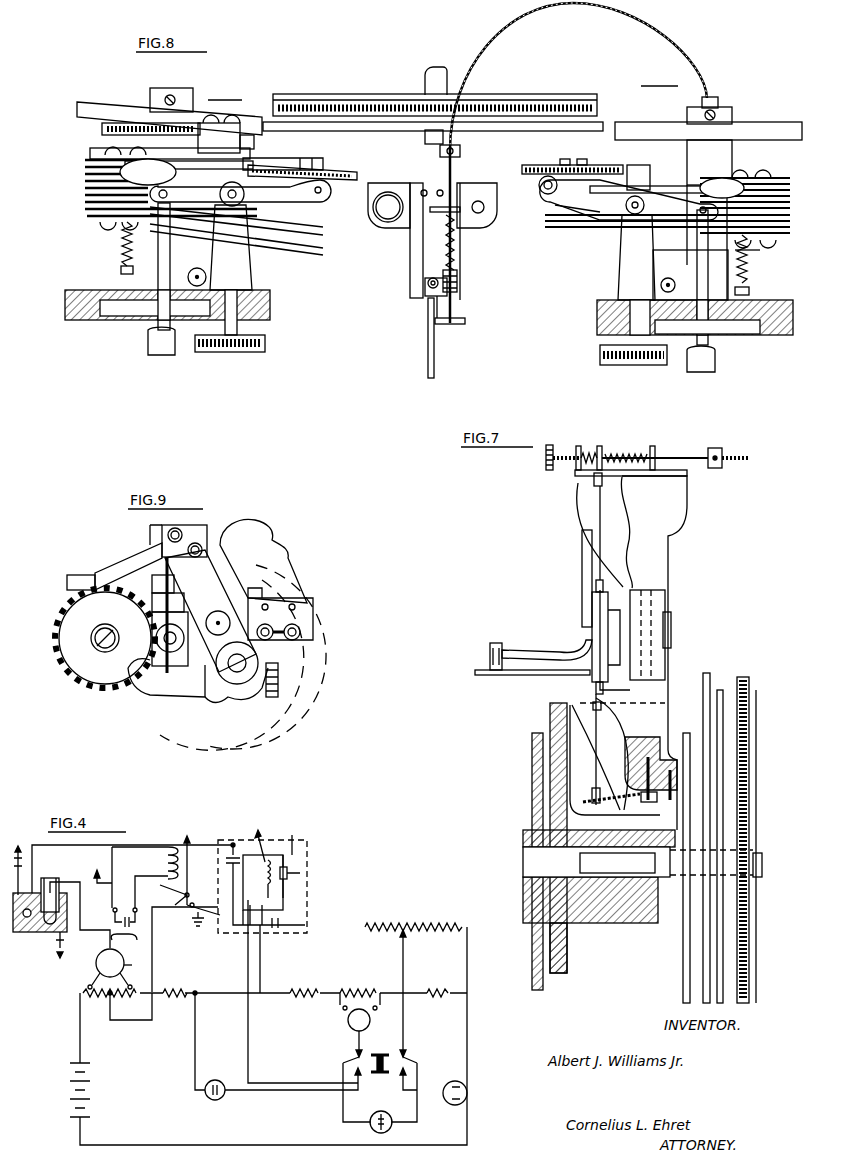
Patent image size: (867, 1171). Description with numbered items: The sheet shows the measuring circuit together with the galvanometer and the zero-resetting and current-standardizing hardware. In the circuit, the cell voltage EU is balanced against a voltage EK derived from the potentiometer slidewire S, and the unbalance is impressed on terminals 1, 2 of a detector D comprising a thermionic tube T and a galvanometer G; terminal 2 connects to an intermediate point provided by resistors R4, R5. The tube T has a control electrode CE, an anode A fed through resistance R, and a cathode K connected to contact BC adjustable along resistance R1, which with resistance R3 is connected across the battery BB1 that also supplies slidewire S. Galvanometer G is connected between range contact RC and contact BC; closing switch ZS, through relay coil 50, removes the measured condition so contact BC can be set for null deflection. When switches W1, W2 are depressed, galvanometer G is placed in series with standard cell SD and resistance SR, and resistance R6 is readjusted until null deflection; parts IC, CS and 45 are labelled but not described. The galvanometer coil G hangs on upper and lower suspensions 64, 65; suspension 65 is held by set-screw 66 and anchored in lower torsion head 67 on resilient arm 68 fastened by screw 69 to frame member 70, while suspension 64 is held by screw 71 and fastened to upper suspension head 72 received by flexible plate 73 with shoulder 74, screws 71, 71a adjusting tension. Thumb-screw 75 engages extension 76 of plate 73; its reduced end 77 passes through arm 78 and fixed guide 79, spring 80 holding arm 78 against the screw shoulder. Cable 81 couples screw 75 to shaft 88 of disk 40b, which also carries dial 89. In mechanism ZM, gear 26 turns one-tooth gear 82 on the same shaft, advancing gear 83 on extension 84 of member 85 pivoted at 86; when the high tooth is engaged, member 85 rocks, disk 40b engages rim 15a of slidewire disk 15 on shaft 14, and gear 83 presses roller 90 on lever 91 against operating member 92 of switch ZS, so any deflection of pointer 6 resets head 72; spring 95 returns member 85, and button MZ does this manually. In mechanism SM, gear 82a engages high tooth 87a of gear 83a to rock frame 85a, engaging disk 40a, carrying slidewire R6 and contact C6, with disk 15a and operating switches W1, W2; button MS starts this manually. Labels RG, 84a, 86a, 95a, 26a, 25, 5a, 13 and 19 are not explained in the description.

In FIG. 8, the standardizing mechanism SM is at (225, 92).
In FIG. 8, the zero-resetting mechanism ZM is at (659, 77).
In FIG. 8, the flexible cable 81 is at (476, 58).
In FIG. 7, the flexible cable 81 is at (738, 461).
In FIG. 8, the shaft of disk 40b 88 is at (719, 100).
In FIG. 8, the disk 40b is at (628, 124).
In FIG. 8, the disk 40a is at (76, 110).
In FIG. 9, the disk 40a is at (332, 668).
In FIG. 8, the rack gear RG is at (103, 128).
In FIG. 9, the rack gear RG is at (246, 748).
In FIG. 8, the slidewire S is at (320, 98).
In FIG. 7, the slidewire S is at (744, 677).
In FIG. 4, the slidewire S is at (133, 965).
In FIG. 8, the slidewire disk 15 is at (552, 100).
In FIG. 8, the disk 15a is at (600, 131).
In FIG. 7, the disk 15a is at (706, 673).
In FIG. 8, the shaft 14 is at (425, 78).
In FIG. 7, the shaft 14 is at (523, 862).
In FIG. 8, the plate 84a is at (288, 158).
In FIG. 8, the gear 83a is at (352, 170).
In FIG. 9, the gear 83a is at (70, 674).
In FIG. 8, the switch W1 is at (326, 226).
In FIG. 4, the switch W1 is at (347, 1062).
In FIG. 8, the switch W2 is at (316, 246).
In FIG. 4, the switch W2 is at (412, 1064).
In FIG. 8, the operating member of switch ZS 92 is at (328, 203).
In FIG. 8, the frame 85a is at (212, 236).
In FIG. 8, the push button MS is at (162, 356).
In FIG. 8, the pivot 86a is at (206, 276).
In FIG. 8, the spring 95a is at (124, 248).
In FIG. 9, the spring 95a is at (280, 690).
In FIG. 8, the gear 26a is at (236, 353).
In FIG. 8, the thumb-screw 75 is at (453, 176).
In FIG. 7, the thumb-screw 75 is at (545, 459).
In FIG. 8, the reduced end of screw 75 77 is at (458, 258).
In FIG. 7, the reduced end of screw 75 77 is at (702, 458).
In FIG. 8, the spring 80 is at (458, 278).
In FIG. 7, the spring 80 is at (622, 454).
In FIG. 8, the frame member 70 is at (482, 196).
In FIG. 7, the frame member 70 is at (656, 566).
In FIG. 8, the screw 71a is at (424, 214).
In FIG. 7, the screw 71a is at (641, 484).
In FIG. 8, the fixed guide 79 is at (460, 214).
In FIG. 7, the fixed guide 79 is at (656, 454).
In FIG. 8, the flexible plate 73 is at (462, 248).
In FIG. 7, the flexible plate 73 is at (670, 477).
In FIG. 8, the arm 78 is at (428, 283).
In FIG. 7, the arm 78 is at (600, 446).
In FIG. 8, the upper suspension head 72 is at (430, 296).
In FIG. 7, the upper suspension head 72 is at (594, 480).
In FIG. 8, the upstanding extension 76 is at (436, 305).
In FIG. 7, the upstanding extension 76 is at (579, 446).
In FIG. 8, the galvanometer pointer 6 is at (435, 363).
In FIG. 7, the galvanometer pointer 6 is at (522, 676).
In FIG. 8, the gear 83 is at (546, 169).
In FIG. 8, the one-tooth gear 82 is at (640, 166).
In FIG. 8, the extension 84 is at (665, 186).
In FIG. 8, the roller 90 is at (540, 186).
In FIG. 8, the lever 91 is at (596, 218).
In FIG. 8, the leaf stack 25 is at (541, 220).
In FIG. 8, the pivot 86 is at (667, 278).
In FIG. 8, the push button MZ is at (704, 373).
In FIG. 8, the supporting member 85 is at (758, 249).
In FIG. 8, the spring 95 is at (748, 276).
In FIG. 8, the dial 89 is at (750, 335).
In FIG. 8, the gear 26 is at (626, 366).
In FIG. 7, the shoulder 74 is at (606, 453).
In FIG. 7, the upper suspension 64 is at (599, 500).
In FIG. 7, the galvanometer G is at (591, 618).
In FIG. 4, the galvanometer G is at (390, 1129).
In FIG. 7, the screw 71 is at (595, 586).
In FIG. 7, the hook 5a is at (488, 658).
In FIG. 7, the lower suspension 65 is at (592, 708).
In FIG. 7, the set-screw 66 is at (594, 702).
In FIG. 7, the lower torsion head 67 is at (600, 790).
In FIG. 7, the resilient arm 68 is at (620, 800).
In FIG. 7, the screw 69 is at (669, 802).
In FIG. 7, the frame 13 is at (532, 745).
In FIG. 7, the rail 19 is at (687, 733).
In FIG. 9, the contact C6 is at (185, 615).
In FIG. 9, the gear 82a is at (175, 655).
In FIG. 9, the high tooth 87a is at (100, 695).
In FIG. 4, the cell voltage EU is at (33, 870).
In FIG. 4, the cell IC is at (40, 918).
In FIG. 4, the switch ZS is at (126, 887).
In FIG. 4, the relay coil 50 is at (165, 860).
In FIG. 4, the terminal 1 is at (189, 862).
In FIG. 4, the switch arm 45 is at (190, 890).
In FIG. 4, the cell switch CS is at (104, 951).
In FIG. 4, the potentiometer voltage EK is at (128, 942).
In FIG. 4, the resistor R4 is at (95, 1000).
In FIG. 4, the terminal 2 is at (108, 996).
In FIG. 4, the resistor R5 is at (126, 1020).
In FIG. 4, the resistance SR is at (240, 1002).
In FIG. 4, the resistance R3 is at (434, 996).
In FIG. 4, the battery BB1 is at (92, 1094).
In FIG. 4, the standard cell SD is at (268, 1054).
In FIG. 4, the thermionic tube T is at (262, 875).
In FIG. 4, the cathode K is at (258, 890).
In FIG. 4, the anode A is at (258, 839).
In FIG. 4, the control electrode CE is at (300, 873).
In FIG. 4, the resistance R is at (408, 925).
In FIG. 4, the range contact RC is at (408, 934).
In FIG. 4, the detector D is at (335, 970).
In FIG. 4, the resistance R1 is at (347, 1020).
In FIG. 4, the contact BC is at (362, 1036).
In FIG. 4, the resistance R6 is at (455, 1081).